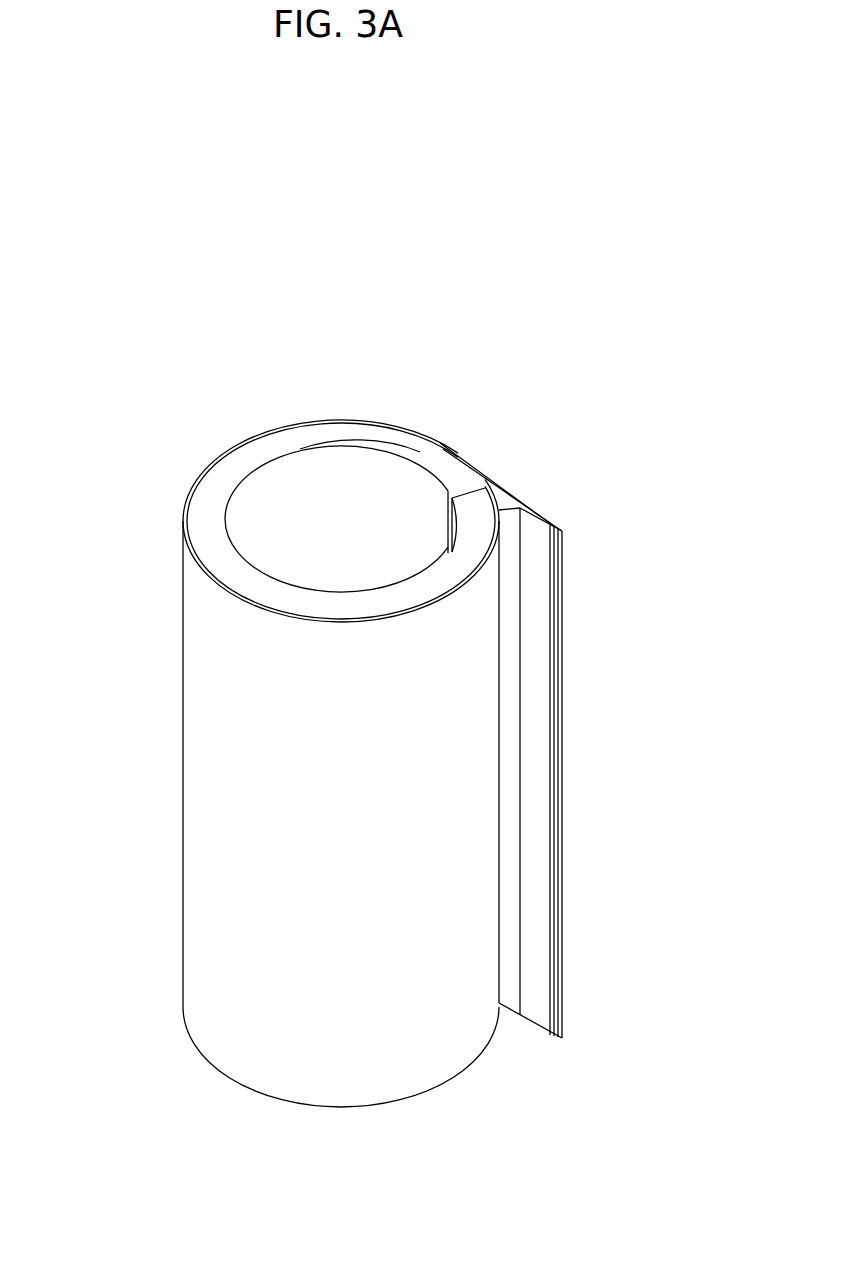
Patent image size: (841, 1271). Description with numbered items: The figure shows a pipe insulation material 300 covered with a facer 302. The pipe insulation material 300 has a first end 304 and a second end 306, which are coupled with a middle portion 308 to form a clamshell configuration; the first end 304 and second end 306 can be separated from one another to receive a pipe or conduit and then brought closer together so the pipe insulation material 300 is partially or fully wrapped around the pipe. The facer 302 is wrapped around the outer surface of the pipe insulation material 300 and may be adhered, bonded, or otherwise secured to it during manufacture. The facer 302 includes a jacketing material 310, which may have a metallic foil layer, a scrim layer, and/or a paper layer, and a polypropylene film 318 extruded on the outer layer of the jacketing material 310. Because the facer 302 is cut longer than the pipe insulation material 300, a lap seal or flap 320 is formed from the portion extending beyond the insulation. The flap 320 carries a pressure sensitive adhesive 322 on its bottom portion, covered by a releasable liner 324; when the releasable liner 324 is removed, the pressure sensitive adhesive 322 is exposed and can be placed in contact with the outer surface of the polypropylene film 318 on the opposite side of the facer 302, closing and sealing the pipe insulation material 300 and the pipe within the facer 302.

The pipe insulation material 300 is at (368, 452).
The facer 302 is at (515, 493).
The first end 304 is at (527, 510).
The second end 306 is at (465, 460).
The middle portion 308 is at (225, 532).
The jacketing material 310 is at (190, 493).
The polypropylene film 318 is at (183, 852).
The flap 320 is at (540, 1030).
The pressure sensitive adhesive 322 is at (562, 528).
The releasable liner 324 is at (535, 598).